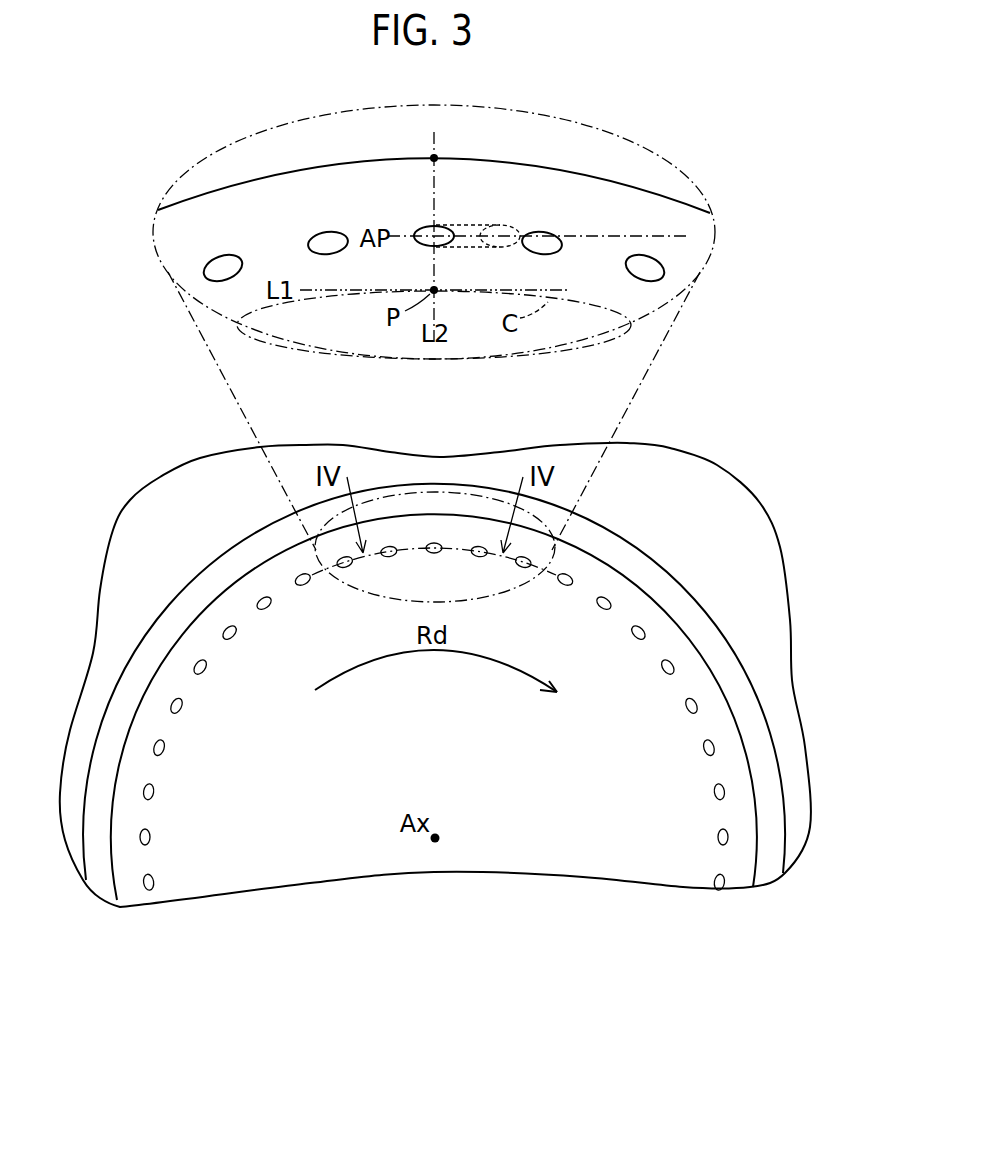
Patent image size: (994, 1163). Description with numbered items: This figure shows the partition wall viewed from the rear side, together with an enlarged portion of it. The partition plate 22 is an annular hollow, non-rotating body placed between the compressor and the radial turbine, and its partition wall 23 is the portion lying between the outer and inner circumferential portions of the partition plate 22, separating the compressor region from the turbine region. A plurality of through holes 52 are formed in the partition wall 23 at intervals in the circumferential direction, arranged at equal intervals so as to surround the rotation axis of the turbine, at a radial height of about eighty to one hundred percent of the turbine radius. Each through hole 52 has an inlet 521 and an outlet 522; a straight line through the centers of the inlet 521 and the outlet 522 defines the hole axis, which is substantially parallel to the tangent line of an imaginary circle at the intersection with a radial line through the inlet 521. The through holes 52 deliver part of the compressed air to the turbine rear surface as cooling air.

The partition plate 22 is at (728, 456).
The partition wall 23 is at (637, 610).
The through hole 52 is at (217, 262).
The inlet 521 is at (421, 229).
The outlet 522 is at (505, 226).